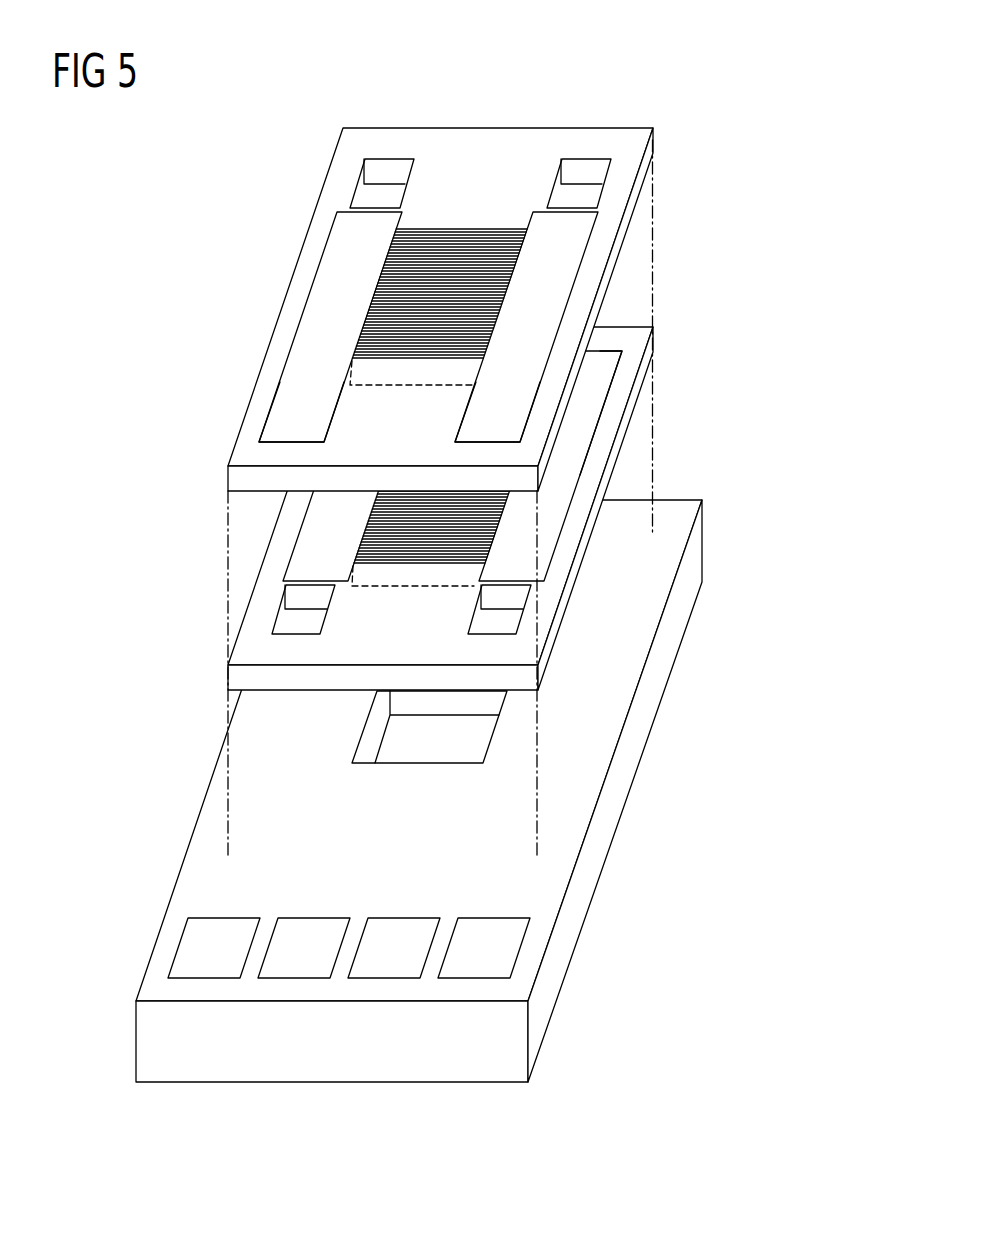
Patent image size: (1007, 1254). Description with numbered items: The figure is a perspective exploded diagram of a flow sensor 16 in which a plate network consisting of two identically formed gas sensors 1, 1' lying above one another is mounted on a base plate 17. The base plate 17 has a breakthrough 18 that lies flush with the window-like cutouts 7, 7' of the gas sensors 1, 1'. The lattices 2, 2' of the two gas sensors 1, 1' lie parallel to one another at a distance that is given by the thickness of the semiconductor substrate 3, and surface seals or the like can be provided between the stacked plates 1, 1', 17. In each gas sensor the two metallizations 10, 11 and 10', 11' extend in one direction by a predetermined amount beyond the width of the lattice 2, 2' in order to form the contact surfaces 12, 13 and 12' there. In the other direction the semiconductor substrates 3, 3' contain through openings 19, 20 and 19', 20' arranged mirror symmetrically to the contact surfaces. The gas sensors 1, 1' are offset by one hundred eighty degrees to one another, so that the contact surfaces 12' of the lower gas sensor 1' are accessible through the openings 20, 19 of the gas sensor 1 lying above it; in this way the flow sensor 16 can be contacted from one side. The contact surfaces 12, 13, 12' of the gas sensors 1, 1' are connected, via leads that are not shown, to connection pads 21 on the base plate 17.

The gas sensor 1 is at (456, 289).
The gas sensor 1' is at (459, 514).
The lattice 2 is at (439, 260).
The lattice 2' is at (441, 534).
The semiconductor substrate 3 is at (411, 315).
The semiconductor substrate 3' is at (411, 514).
The window-like cutout 7 is at (412, 406).
The window-like cutout 7' is at (413, 608).
The metallization 10 is at (324, 327).
The metallization 10' is at (569, 466).
The metallization 11 is at (576, 327).
The metallization 11' is at (299, 466).
The contact surface 12 is at (265, 412).
The contact surface 12' is at (647, 413).
The contact surface 13 is at (510, 423).
The flow sensor 16 is at (267, 205).
The base plate 17 is at (152, 1039).
The breakthrough 18 is at (412, 743).
The through opening 19 is at (382, 142).
The through opening 19' is at (541, 612).
The through opening 20 is at (579, 142).
The through opening 20' is at (253, 609).
The connection pad 21 is at (315, 932).